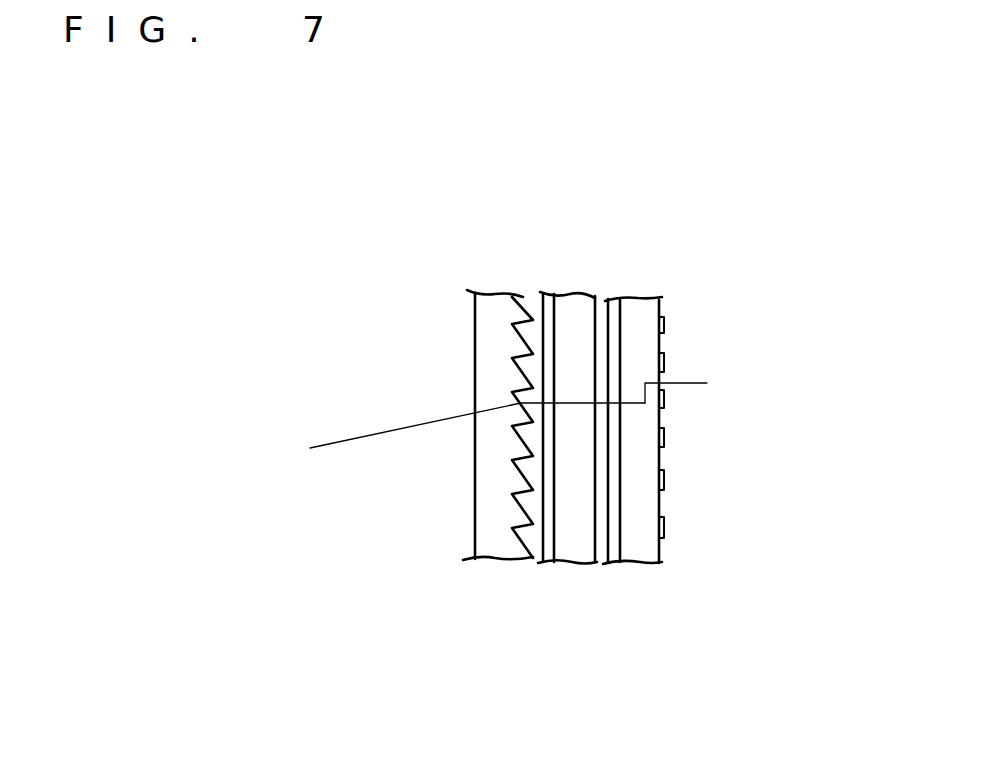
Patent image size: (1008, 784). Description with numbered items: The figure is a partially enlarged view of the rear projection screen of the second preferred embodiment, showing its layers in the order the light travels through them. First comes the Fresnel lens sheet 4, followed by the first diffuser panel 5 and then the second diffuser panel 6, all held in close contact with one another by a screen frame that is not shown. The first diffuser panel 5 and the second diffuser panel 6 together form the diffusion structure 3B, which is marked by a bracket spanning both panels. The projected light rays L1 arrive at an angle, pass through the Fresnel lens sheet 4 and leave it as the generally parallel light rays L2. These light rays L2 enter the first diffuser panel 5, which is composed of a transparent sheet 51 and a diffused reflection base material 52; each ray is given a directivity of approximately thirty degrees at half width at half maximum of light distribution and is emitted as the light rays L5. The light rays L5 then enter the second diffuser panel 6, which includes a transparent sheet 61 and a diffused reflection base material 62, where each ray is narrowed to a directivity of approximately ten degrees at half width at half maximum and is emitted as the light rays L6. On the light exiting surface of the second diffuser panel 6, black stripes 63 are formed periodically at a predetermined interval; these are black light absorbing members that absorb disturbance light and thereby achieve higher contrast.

The Fresnel lens sheet 4 is at (472, 330).
The diffusion structure 3B is at (695, 165).
The first diffuser panel 5 is at (558, 451).
The transparent sheet 51 is at (550, 560).
The diffused reflection base material 52 is at (575, 550).
The second diffuser panel 6 is at (696, 451).
The transparent sheet 61 is at (615, 557).
The diffused reflection base material 62 is at (640, 552).
The black stripes 63 is at (665, 523).
The projected light rays L1 is at (370, 412).
The generally parallel light rays L2 is at (534, 396).
The light rays L5 is at (604, 412).
The light rays L6 is at (690, 396).